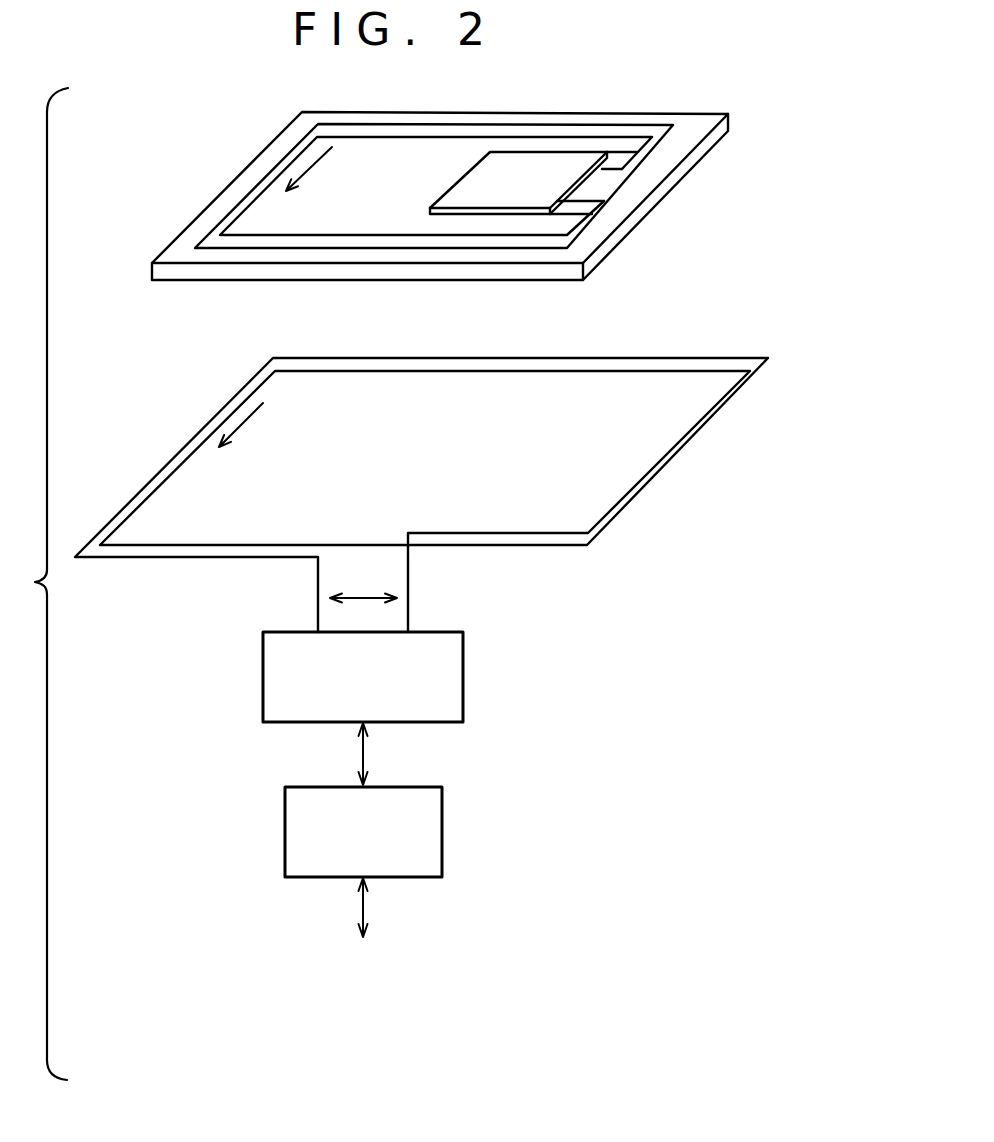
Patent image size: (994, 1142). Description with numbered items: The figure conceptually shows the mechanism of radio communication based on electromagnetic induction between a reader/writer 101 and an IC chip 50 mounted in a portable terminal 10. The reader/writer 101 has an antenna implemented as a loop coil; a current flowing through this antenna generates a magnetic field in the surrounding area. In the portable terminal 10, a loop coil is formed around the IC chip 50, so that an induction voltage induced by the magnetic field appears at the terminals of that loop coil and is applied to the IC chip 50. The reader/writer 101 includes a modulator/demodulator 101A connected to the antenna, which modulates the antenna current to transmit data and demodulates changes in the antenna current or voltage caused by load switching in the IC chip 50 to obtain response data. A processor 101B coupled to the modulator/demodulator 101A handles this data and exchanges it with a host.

The portable terminal 10 is at (642, 261).
The IC chip 50 is at (557, 148).
The reader/writer 101 is at (421, 665).
The modulator/demodulator 101A is at (463, 677).
The processor 101B is at (442, 830).